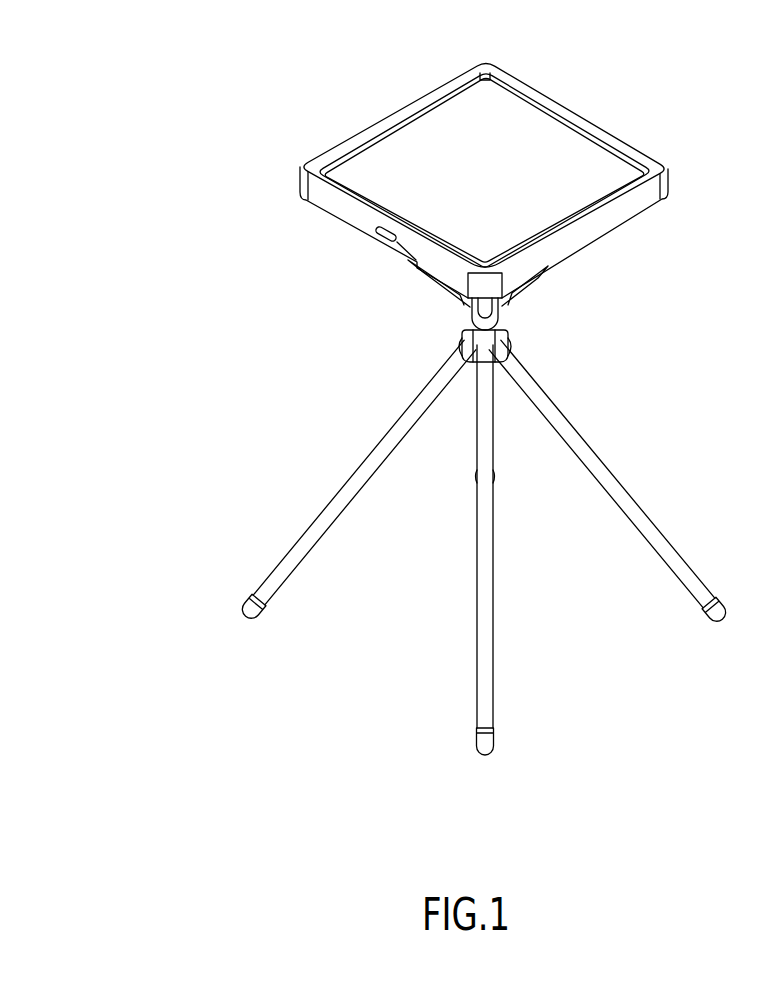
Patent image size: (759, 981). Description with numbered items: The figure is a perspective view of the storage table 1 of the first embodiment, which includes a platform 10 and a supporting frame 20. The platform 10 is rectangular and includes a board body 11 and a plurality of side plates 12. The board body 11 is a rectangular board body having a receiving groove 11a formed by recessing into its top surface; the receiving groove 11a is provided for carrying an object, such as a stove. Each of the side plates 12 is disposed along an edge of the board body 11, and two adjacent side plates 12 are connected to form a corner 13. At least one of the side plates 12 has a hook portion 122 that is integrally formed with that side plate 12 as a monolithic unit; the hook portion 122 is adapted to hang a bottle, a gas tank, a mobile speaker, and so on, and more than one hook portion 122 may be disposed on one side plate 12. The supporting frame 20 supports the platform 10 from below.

The storage table 1 is at (439, 385).
The platform 10 is at (413, 212).
The board body 11 is at (469, 70).
The receiving groove 11a is at (453, 153).
The side plate 12 is at (323, 198).
The hook portion 122 is at (383, 246).
The corner 13 is at (490, 283).
The supporting frame 20 is at (311, 476).